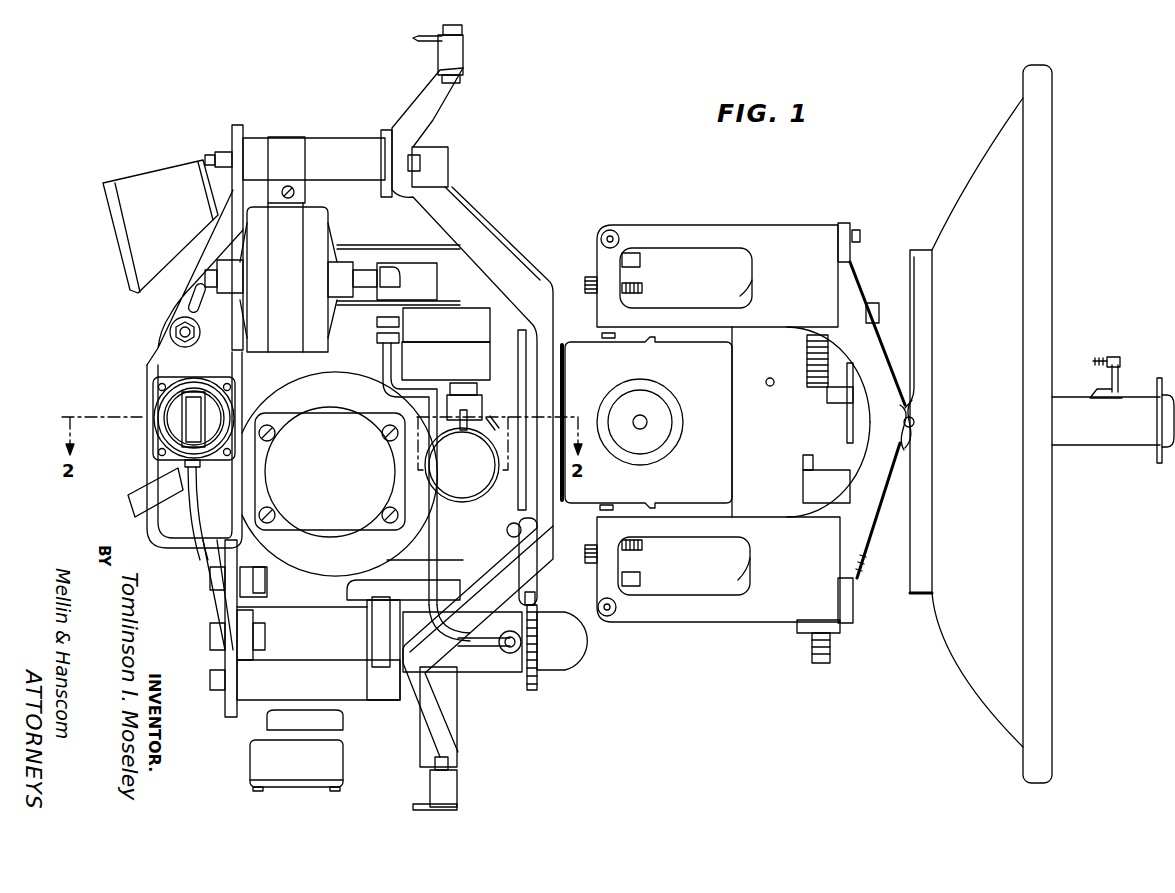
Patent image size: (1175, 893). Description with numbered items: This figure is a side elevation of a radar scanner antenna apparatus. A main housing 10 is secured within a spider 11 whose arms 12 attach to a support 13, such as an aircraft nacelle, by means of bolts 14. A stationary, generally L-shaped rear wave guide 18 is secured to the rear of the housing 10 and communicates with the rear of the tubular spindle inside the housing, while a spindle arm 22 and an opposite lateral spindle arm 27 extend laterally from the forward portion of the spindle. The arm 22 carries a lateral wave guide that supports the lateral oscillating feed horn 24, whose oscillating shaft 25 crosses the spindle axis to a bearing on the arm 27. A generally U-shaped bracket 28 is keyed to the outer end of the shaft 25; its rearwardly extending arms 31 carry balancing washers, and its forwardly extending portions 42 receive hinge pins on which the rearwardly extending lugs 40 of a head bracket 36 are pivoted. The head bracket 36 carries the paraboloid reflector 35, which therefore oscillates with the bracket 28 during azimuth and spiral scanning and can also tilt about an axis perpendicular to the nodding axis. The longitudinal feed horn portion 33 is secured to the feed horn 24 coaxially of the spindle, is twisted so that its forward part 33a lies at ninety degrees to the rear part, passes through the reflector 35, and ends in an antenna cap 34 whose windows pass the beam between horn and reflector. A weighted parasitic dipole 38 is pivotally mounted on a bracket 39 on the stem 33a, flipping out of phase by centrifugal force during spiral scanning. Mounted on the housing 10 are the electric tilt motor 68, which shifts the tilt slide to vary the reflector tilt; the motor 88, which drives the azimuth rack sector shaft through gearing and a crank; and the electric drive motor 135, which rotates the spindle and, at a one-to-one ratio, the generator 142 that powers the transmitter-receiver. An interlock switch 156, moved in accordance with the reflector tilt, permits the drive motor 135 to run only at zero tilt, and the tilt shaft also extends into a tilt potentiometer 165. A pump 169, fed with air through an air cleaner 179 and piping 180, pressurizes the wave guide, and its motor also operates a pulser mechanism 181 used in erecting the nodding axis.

The main housing 10 is at (592, 512).
The spider 11 is at (516, 240).
The arms 12 is at (423, 133).
The support 13 is at (422, 41).
The bolts 14 is at (462, 30).
The rear wave guide 18 is at (154, 398).
The spindle arm 22 is at (768, 514).
The oscillating feed horn 24 is at (813, 477).
The oscillating shaft 25 is at (833, 378).
The lateral spindle arm 27 is at (770, 359).
The U-shaped bracket 28 is at (758, 220).
The rearwardly extending arms 31 is at (677, 228).
The longitudinal feed horn portion 33 is at (1080, 448).
The forward part of feed horn 33a is at (1143, 446).
The antenna cap 34 is at (1164, 385).
The reflector 35 is at (984, 158).
The head bracket 36 is at (918, 252).
The parasitic dipole 38 is at (1118, 357).
The bracket 39 is at (1100, 382).
The lugs 40 is at (900, 443).
The forwardly extending portions 42 is at (878, 358).
The tilt motor 68 is at (448, 717).
The motor 88 is at (123, 183).
The electric motor 135 is at (335, 472).
The generator 142 is at (448, 177).
The switch 156 is at (443, 374).
The tilt potentiometer 165 is at (472, 476).
The pump 169 is at (478, 662).
The air cleaner 179 is at (323, 231).
The piping 180 is at (385, 360).
The pulser mechanism 181 is at (245, 766).